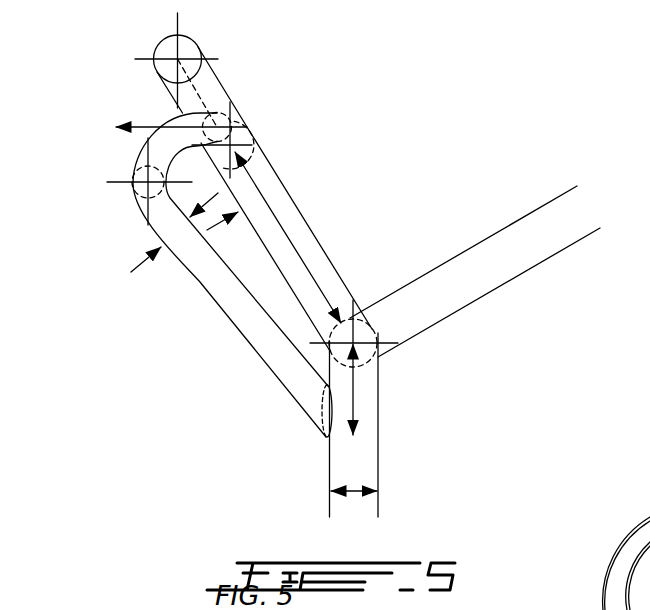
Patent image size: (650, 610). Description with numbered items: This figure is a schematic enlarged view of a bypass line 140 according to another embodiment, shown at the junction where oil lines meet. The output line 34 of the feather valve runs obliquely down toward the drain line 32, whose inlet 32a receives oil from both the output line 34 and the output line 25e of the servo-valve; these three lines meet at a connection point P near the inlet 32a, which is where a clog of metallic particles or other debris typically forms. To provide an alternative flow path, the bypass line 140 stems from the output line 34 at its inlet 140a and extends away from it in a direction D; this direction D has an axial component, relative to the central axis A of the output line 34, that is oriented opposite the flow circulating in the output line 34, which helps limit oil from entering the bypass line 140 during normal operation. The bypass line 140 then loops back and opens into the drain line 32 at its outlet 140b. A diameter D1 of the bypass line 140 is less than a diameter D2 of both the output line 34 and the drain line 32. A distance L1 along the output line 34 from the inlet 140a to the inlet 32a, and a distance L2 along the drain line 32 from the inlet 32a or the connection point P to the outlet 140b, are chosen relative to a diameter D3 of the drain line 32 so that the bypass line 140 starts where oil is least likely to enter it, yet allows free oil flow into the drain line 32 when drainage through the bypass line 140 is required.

The bypass line 140 is at (207, 313).
The inlet of the bypass line 140a is at (160, 106).
The outlet of the bypass line 140b is at (313, 452).
The output line of the feather valve 34 is at (302, 204).
The drain line 32 is at (379, 427).
The inlet of the drain line 32a is at (391, 364).
The output line of the servo-valve 25e is at (515, 288).
The central axis of the output line A is at (200, 83).
The direction D is at (137, 130).
The diameter of the bypass line D1 is at (131, 272).
The diameter of the output line and drain line D2 is at (287, 183).
The diameter of the drain line D3 is at (354, 510).
The distance along the output line L1 is at (297, 250).
The distance along the drain line L2 is at (356, 389).
The connection point P is at (378, 283).